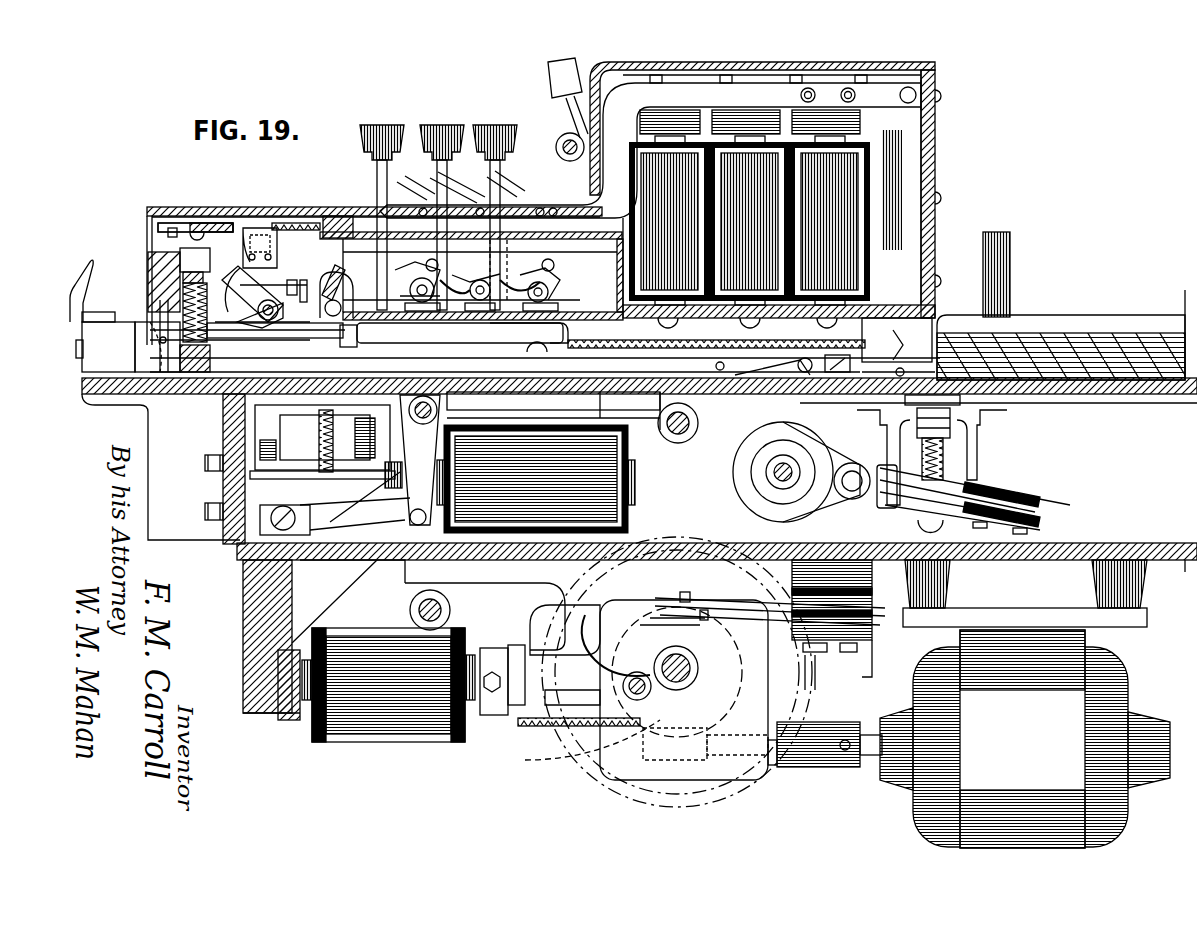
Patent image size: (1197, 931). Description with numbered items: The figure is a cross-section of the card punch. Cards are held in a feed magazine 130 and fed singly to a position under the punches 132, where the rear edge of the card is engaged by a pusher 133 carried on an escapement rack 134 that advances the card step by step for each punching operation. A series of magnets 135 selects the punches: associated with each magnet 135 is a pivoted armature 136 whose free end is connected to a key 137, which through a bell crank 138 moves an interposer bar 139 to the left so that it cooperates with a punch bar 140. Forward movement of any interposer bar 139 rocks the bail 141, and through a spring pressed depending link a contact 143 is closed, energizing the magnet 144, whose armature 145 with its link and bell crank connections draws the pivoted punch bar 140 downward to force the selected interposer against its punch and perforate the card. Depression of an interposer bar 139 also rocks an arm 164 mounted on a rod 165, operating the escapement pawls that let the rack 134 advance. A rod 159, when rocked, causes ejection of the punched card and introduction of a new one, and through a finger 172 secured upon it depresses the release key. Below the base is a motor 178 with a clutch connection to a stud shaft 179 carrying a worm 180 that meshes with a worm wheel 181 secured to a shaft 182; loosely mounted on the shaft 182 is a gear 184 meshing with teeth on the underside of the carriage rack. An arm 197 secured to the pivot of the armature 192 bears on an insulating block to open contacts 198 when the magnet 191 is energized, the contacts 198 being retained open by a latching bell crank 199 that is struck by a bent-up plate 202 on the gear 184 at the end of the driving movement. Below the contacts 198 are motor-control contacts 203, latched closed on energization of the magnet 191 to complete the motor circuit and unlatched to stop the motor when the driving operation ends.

The feed magazine 130 is at (1082, 350).
The punches 132 is at (146, 292).
The pusher 133 is at (745, 372).
The escapement rack 134 is at (768, 358).
The magnets 135 is at (780, 228).
The pivoted armature 136 is at (732, 98).
The key 137 is at (502, 207).
The bell crank 138 is at (572, 325).
The interposer bar 139 is at (466, 260).
The punch bar 140 is at (205, 236).
The bail 141 is at (296, 289).
The contact 143 is at (322, 438).
The magnet 144 is at (582, 502).
The armature 145 is at (412, 505).
The rod 159 is at (560, 144).
The arm 164 is at (236, 280).
The rod 165 is at (250, 320).
The finger 172 is at (546, 74).
The motor 178 is at (965, 793).
The stud shaft 179 is at (770, 768).
The worm 180 is at (672, 752).
The worm wheel 181 is at (740, 686).
The shaft 182 is at (674, 682).
The gear 184 is at (603, 748).
The magnet 191 is at (372, 648).
The armature 192 is at (492, 705).
The arm 197 is at (518, 598).
The contacts 198 is at (695, 610).
The latching bell crank 199 is at (603, 700).
The bent-up plate 202 is at (548, 705).
The motor-control contacts 203 is at (705, 630).